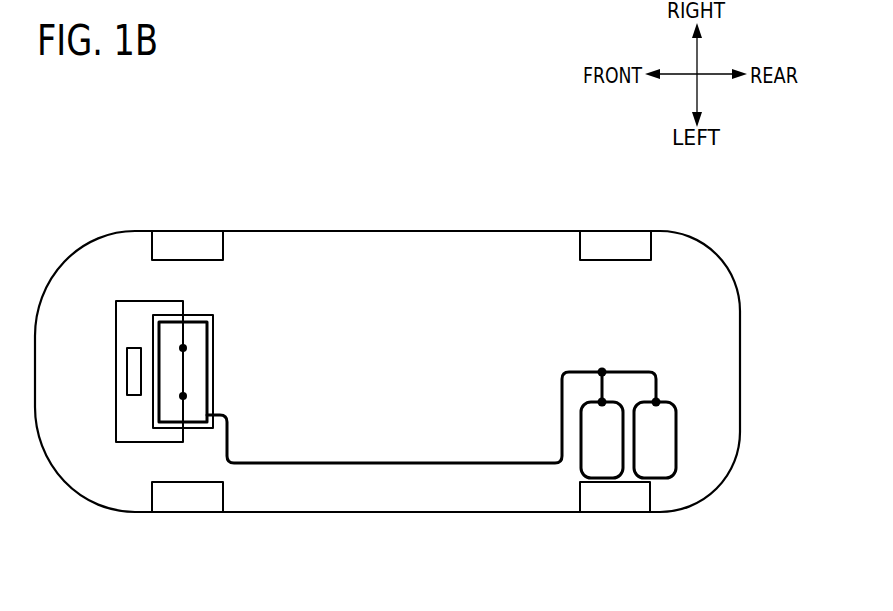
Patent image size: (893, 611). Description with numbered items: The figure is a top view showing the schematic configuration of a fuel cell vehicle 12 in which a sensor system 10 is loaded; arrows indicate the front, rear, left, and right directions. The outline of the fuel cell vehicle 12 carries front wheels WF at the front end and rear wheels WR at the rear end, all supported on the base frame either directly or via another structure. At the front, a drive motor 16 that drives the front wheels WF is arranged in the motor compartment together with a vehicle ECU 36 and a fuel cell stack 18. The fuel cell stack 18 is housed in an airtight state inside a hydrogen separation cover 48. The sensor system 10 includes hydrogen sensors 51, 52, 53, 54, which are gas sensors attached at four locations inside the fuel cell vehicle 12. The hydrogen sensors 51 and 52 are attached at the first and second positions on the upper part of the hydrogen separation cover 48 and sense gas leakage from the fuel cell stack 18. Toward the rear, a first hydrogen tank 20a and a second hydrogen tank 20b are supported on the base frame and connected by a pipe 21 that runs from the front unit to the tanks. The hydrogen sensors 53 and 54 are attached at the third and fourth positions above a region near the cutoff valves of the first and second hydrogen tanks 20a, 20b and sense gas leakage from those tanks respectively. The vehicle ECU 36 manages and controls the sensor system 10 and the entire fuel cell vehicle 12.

The sensor system 10 is at (336, 110).
The fuel cell vehicle 12 is at (404, 227).
The drive motor 16 is at (116, 328).
The fuel cell stack 18 is at (190, 320).
The pipe 21 is at (365, 462).
The vehicle ECU 36 is at (127, 374).
The hydrogen separation cover 48 is at (215, 338).
The hydrogen sensor 51 is at (183, 348).
The hydrogen sensor 52 is at (183, 396).
The hydrogen sensor 53 is at (601, 402).
The hydrogen sensor 54 is at (672, 403).
The first hydrogen tank 20a is at (580, 465).
The second hydrogen tank 20b is at (673, 477).
The front wheels WF is at (185, 248).
The rear wheels WR is at (613, 247).